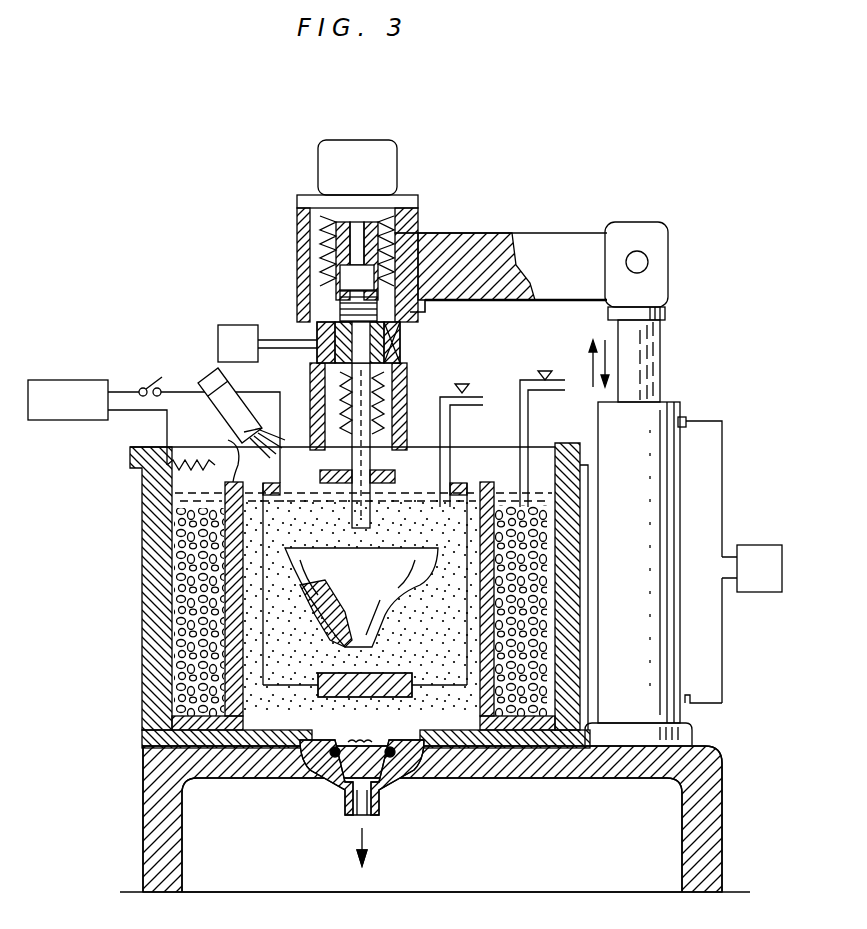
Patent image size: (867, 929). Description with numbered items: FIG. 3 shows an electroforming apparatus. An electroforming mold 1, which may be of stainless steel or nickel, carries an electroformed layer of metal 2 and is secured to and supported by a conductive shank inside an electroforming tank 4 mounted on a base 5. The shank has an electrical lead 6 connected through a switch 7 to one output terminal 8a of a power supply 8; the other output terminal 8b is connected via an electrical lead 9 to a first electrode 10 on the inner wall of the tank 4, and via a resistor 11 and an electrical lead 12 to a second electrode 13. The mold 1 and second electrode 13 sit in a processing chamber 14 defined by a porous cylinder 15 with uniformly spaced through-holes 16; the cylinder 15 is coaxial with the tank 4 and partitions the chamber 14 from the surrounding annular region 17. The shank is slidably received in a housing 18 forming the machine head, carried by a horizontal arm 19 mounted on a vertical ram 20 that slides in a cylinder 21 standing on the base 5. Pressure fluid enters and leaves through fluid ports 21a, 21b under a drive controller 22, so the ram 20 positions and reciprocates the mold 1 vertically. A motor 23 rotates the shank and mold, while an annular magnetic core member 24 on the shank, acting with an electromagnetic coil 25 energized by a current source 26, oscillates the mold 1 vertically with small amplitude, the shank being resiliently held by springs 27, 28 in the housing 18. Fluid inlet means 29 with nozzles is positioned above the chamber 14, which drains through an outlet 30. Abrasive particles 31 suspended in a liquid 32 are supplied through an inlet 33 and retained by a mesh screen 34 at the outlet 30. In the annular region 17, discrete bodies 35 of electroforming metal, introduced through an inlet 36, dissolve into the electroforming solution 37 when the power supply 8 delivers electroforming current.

The electroforming mold 1 is at (322, 634).
The layer of metal 2 is at (318, 545).
The electroforming tank 4 is at (334, 595).
The base 5 is at (160, 818).
The electrical lead 6 is at (281, 414).
The switch 7 is at (160, 396).
The power supply 8 is at (60, 380).
The output terminal 8a is at (122, 390).
The output terminal 8b is at (140, 411).
The electrical lead 9 is at (175, 496).
The first electrode 10 is at (152, 560).
The resistor 11 is at (183, 462).
The electrical lead 12 is at (272, 482).
The second electrode 13 is at (384, 684).
The processing chamber 14 is at (436, 637).
The porous cylinder 15 is at (221, 450).
The through-holes 16 is at (486, 492).
The annular region 17 is at (208, 645).
The housing 18 is at (404, 348).
The arm 19 is at (566, 233).
The ram 20 is at (652, 338).
The cylinder 21 is at (664, 570).
The fluid port 21a is at (688, 427).
The fluid port 21b is at (690, 712).
The drive controller 22 is at (758, 592).
The motor 23 is at (388, 158).
The annular magnetic core member 24 is at (345, 300).
The electromagnetic coil 25 is at (340, 328).
The current source 26 is at (222, 328).
The spring 27 is at (300, 224).
The spring 28 is at (384, 398).
The fluid inlet means 29 is at (206, 374).
The outlet 30 is at (374, 800).
The abrasive particles 31 is at (432, 748).
The liquid 32 is at (205, 672).
The inlet 33 is at (446, 440).
The mesh screen 34 is at (318, 776).
The discrete bodies 35 is at (172, 536).
The inlet 36 is at (530, 434).
The electroforming solution 37 is at (195, 487).